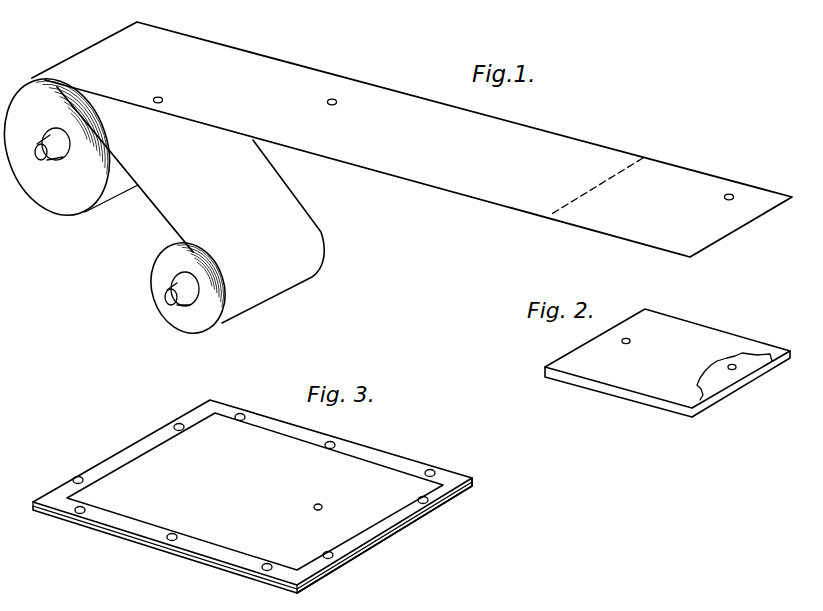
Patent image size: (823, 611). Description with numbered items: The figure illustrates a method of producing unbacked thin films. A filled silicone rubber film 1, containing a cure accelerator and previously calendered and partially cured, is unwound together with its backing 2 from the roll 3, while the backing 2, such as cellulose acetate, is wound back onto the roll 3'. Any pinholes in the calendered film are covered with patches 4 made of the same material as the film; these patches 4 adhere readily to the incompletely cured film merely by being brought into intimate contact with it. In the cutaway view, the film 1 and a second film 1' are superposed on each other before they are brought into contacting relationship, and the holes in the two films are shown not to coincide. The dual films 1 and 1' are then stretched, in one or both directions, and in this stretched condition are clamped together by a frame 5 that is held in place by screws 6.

In FIG. 2, the silicone rubber film 1 is at (667, 362).
In FIG. 3, the silicone rubber film 1 is at (252, 494).
In FIG. 2, the second film 1' is at (667, 394).
In FIG. 3, the second film 1' is at (252, 537).
In FIG. 1, the backing 2 is at (166, 190).
In FIG. 1, the roll 3 is at (69, 155).
In FIG. 1, the roll 3' is at (168, 288).
In FIG. 1, the patches 4 is at (162, 99).
In FIG. 2, the patches 4 is at (624, 339).
In FIG. 3, the patches 4 is at (318, 504).
In FIG. 3, the frame 5 is at (392, 548).
In FIG. 3, the screws 6 is at (340, 440).